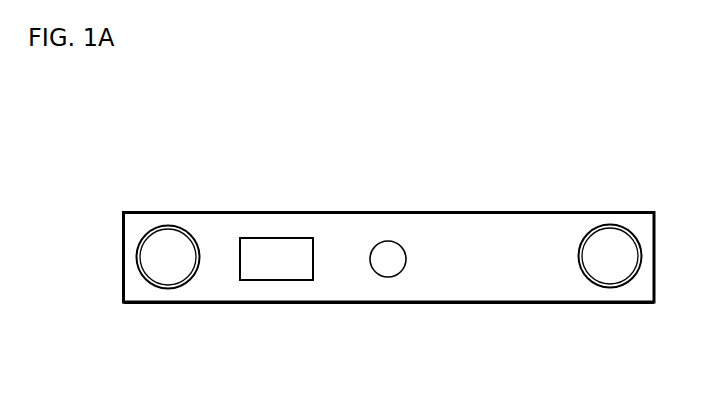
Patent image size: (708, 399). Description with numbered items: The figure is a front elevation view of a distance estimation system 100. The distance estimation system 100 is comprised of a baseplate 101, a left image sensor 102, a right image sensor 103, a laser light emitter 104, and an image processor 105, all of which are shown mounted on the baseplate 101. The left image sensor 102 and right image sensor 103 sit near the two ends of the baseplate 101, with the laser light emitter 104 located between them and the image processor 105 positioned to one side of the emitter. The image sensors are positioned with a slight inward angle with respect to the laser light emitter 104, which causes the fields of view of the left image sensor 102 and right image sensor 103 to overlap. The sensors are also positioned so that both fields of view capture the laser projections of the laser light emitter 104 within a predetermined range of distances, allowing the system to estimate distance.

The distance estimation system 100 is at (563, 143).
The baseplate 101 is at (388, 304).
The left image sensor 102 is at (168, 289).
The right image sensor 103 is at (610, 288).
The laser light emitter 104 is at (388, 241).
The image processor 105 is at (276, 259).